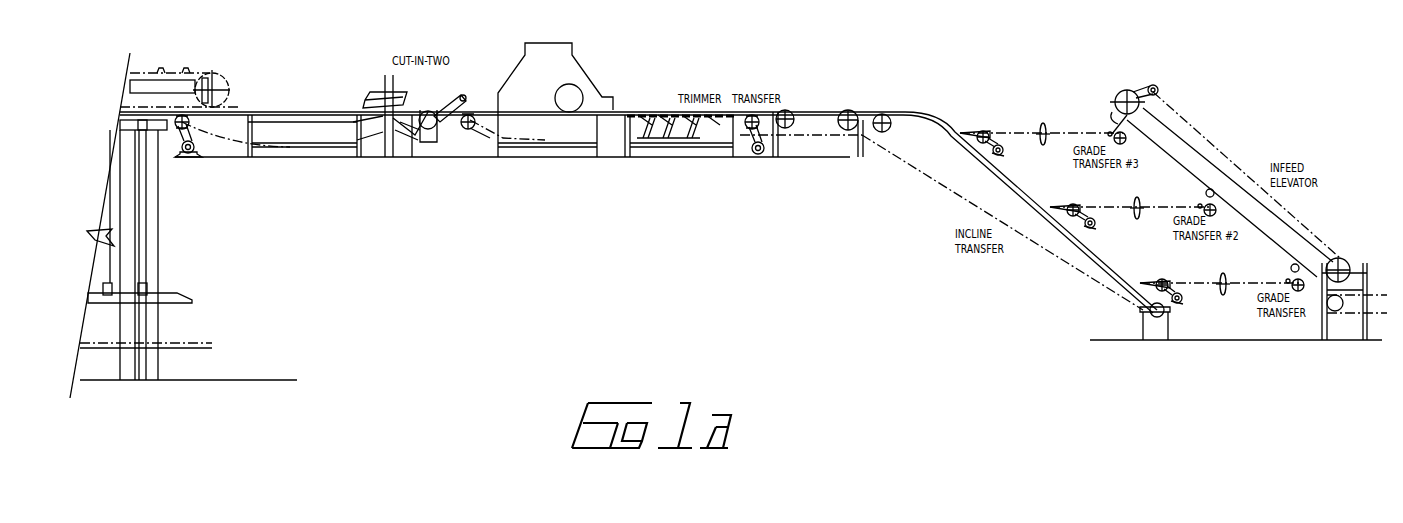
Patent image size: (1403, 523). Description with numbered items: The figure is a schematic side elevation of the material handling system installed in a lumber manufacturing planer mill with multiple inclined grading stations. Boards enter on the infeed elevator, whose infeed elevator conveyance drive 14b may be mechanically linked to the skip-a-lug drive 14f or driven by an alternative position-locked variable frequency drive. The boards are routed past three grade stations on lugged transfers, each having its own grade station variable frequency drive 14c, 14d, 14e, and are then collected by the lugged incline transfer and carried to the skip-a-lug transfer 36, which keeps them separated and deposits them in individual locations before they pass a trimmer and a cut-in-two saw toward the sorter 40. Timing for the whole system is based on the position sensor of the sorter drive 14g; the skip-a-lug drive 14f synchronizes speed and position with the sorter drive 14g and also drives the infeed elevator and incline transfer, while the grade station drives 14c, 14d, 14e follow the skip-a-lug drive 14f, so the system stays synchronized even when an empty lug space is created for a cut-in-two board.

The sorter 40 is at (208, 78).
The sorter drive 14g is at (212, 160).
The skip-a-lug drive 14f is at (766, 152).
The skip-a-lug transfer 36 is at (853, 103).
The grade station variable frequency drive 14e is at (1018, 154).
The grade station variable frequency drive 14d is at (1113, 228).
The grade station variable frequency drive 14c is at (1200, 302).
The infeed elevator conveyance drive 14b is at (1143, 85).